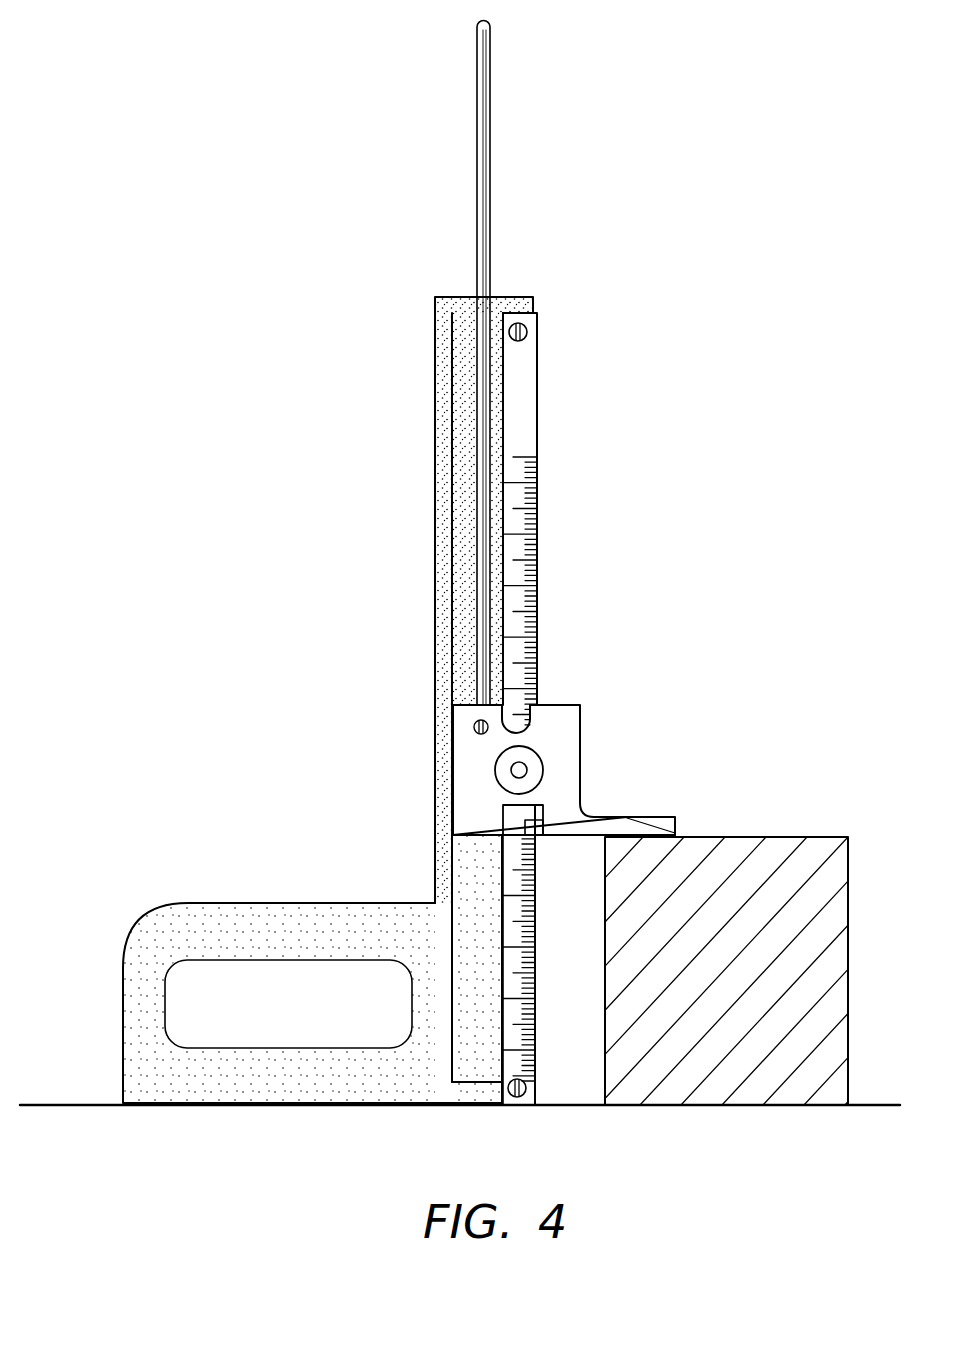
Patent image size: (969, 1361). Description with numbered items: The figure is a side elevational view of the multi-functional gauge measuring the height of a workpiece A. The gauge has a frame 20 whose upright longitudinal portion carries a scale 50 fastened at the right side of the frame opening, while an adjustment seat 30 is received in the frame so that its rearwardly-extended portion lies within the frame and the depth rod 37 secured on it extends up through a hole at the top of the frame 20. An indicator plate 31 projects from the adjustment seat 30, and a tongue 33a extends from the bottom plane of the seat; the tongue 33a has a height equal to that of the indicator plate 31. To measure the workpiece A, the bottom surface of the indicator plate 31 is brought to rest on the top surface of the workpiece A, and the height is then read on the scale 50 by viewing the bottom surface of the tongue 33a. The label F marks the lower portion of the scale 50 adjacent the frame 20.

The frame 20 is at (435, 605).
The adjustment seat 30 is at (452, 762).
The indicator plate 31 is at (617, 816).
The tongue 33a is at (540, 830).
The depth rod 37 is at (487, 162).
The scale 50 is at (538, 415).
The fixed scale F is at (536, 842).
The workpiece A is at (814, 850).